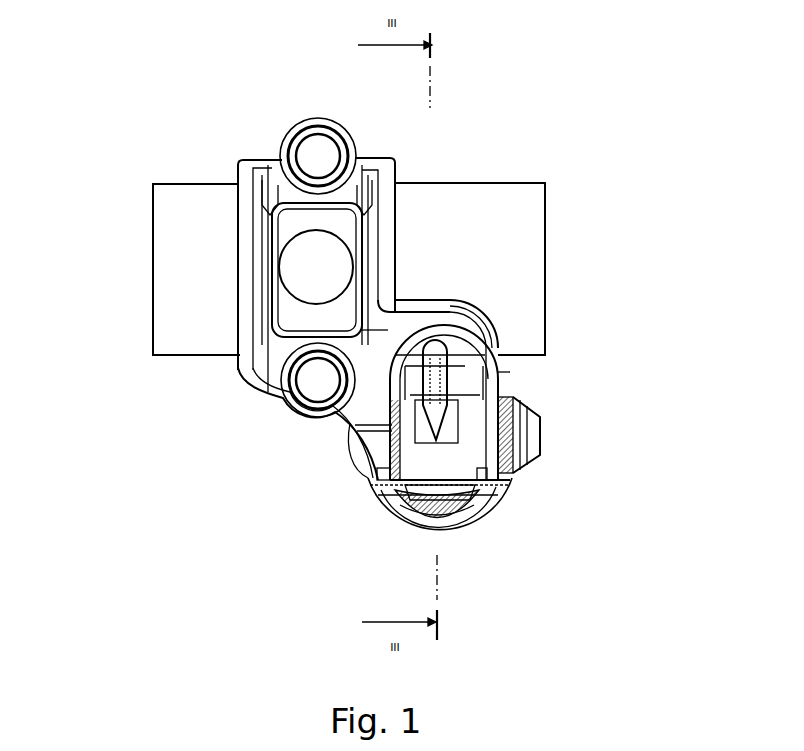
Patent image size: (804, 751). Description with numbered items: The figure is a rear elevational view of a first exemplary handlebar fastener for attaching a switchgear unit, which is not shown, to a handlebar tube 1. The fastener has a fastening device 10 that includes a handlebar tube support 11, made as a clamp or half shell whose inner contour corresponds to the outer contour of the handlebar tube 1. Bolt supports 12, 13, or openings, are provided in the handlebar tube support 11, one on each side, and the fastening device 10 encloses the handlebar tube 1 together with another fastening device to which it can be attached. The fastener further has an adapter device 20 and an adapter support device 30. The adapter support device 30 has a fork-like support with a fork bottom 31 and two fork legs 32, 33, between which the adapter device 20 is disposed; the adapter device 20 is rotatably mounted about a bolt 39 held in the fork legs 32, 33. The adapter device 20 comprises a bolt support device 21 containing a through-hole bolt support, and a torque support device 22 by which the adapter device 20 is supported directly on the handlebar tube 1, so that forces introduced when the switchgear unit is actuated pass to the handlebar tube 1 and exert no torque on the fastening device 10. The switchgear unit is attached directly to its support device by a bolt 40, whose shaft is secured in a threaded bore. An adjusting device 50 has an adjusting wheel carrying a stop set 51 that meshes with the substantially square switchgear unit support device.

The handlebar tube 1 is at (480, 257).
The fastening device 10 is at (367, 172).
The handlebar tube support 11 is at (265, 257).
The bolt support 12 is at (318, 155).
The bolt support 13 is at (312, 368).
The adapter device 20 is at (377, 497).
The bolt support device 21 is at (503, 483).
The torque support device 22 is at (446, 336).
The adapter support device 30 is at (437, 348).
The fork bottom 31 is at (482, 312).
The fork leg 32 is at (390, 410).
The fork leg 33 is at (490, 372).
The bolt 39 is at (530, 428).
The bolt 40 is at (450, 513).
The adjusting device 50 is at (490, 490).
The stop set 51 is at (423, 510).